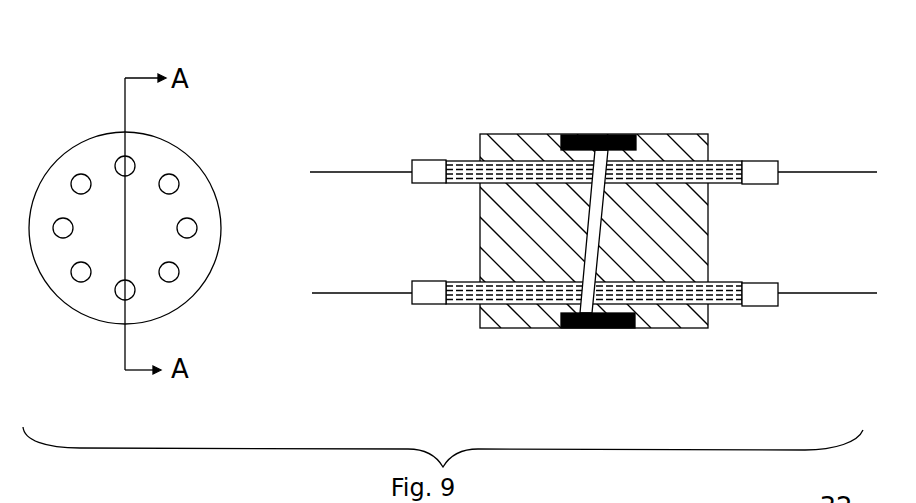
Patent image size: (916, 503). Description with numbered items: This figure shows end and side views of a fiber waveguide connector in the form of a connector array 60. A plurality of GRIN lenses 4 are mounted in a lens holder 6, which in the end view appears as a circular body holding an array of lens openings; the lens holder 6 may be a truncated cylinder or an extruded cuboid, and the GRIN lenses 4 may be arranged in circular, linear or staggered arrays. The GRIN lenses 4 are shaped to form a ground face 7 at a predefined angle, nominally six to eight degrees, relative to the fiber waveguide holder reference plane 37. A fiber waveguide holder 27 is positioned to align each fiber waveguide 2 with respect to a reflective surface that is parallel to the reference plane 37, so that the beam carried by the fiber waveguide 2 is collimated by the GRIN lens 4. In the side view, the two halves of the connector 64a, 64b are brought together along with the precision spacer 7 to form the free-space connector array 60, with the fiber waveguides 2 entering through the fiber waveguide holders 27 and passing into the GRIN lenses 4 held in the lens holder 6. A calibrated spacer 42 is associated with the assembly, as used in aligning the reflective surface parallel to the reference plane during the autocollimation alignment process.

The fiber waveguide 2 is at (357, 292).
The GRIN lens 4 is at (468, 299).
The lens holder 6 is at (599, 225).
The ground face 7 is at (610, 134).
The fiber waveguide holder 27 is at (412, 303).
The fiber waveguide holder reference plane 37 is at (561, 327).
The calibrated spacer 42 is at (598, 330).
The connector array 60 is at (740, 68).
The connector half 64a is at (507, 134).
The connector half 64b is at (658, 134).